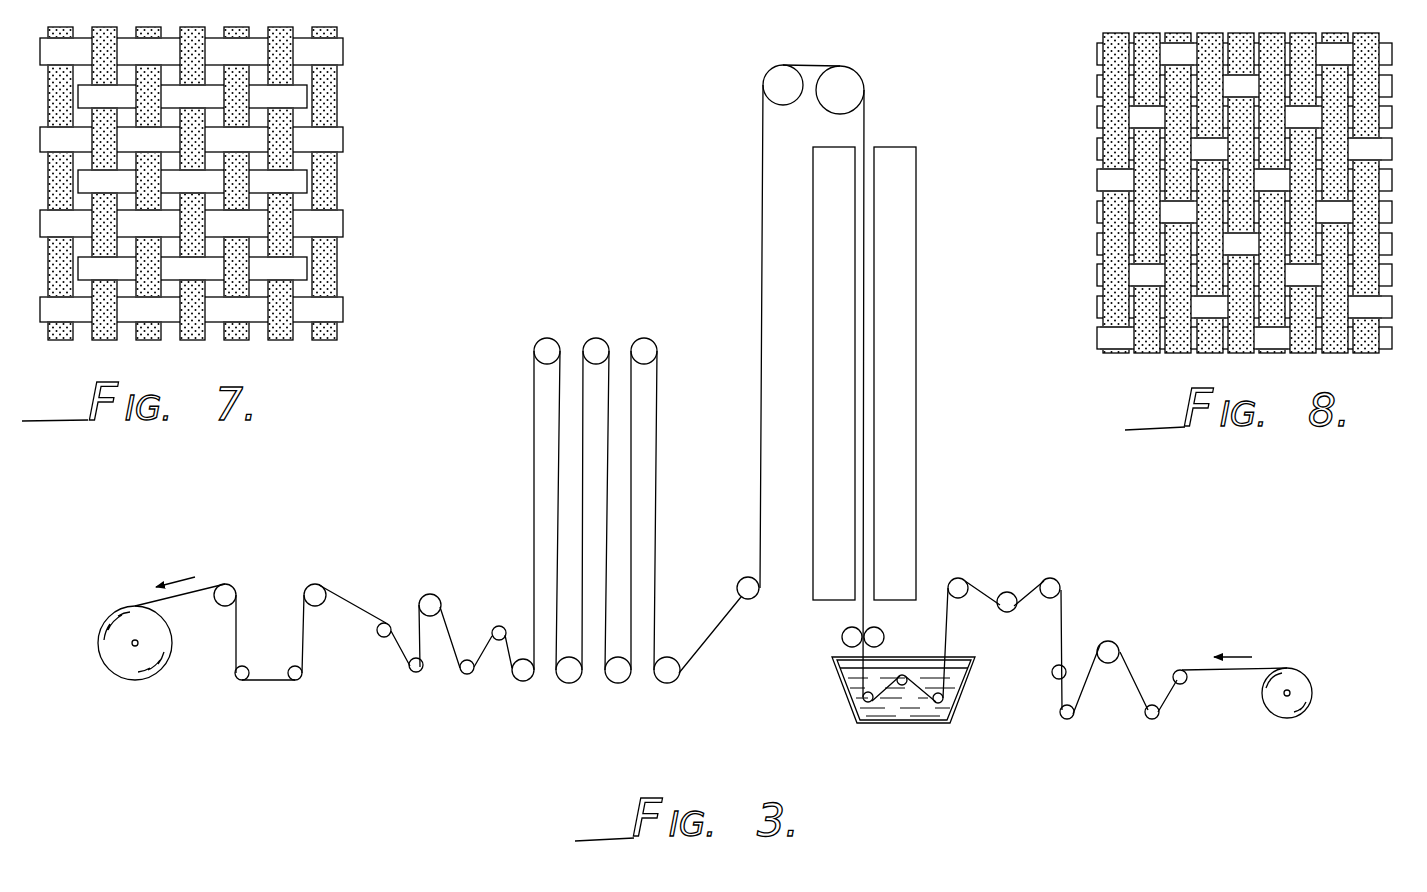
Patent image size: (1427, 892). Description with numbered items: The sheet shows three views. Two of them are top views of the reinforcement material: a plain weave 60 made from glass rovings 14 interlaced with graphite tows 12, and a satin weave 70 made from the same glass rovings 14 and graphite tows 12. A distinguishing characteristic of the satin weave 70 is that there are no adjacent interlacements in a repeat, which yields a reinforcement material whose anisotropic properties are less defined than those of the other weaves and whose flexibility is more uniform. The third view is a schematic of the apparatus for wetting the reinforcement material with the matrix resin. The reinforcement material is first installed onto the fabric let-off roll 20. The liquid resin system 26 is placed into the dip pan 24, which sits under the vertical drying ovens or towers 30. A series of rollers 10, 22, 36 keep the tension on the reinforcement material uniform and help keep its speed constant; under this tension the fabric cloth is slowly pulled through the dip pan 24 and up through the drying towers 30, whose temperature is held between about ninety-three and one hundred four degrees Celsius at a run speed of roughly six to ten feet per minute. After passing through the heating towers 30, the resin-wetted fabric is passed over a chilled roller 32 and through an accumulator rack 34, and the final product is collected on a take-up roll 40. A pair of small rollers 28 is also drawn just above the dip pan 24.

In FIG. 3, the rollers 10 is at (1128, 660).
In FIG. 3, the fabric let-off roll 20 is at (1306, 665).
In FIG. 3, the rollers 22 is at (1070, 580).
In FIG. 3, the dip pan 24 is at (850, 711).
In FIG. 3, the liquid resin system 26 is at (850, 686).
In FIG. 3, the squeeze rollers 28 is at (838, 637).
In FIG. 3, the vertical drying ovens or towers 30 is at (922, 338).
In FIG. 3, the chilled roller 32 is at (872, 60).
In FIG. 3, the accumulator rack 34 is at (562, 316).
In FIG. 3, the rollers 36 is at (329, 554).
In FIG. 3, the take-up roll 40 is at (102, 662).
In FIG. 7, the plain weave 60 is at (238, 183).
In FIG. 8, the satin weave 70 is at (1204, 193).
In FIG. 7, the graphite tows 12 is at (324, 192).
In FIG. 8, the graphite tows 12 is at (1142, 228).
In FIG. 7, the glass rovings 14 is at (292, 267).
In FIG. 8, the glass rovings 14 is at (1098, 327).